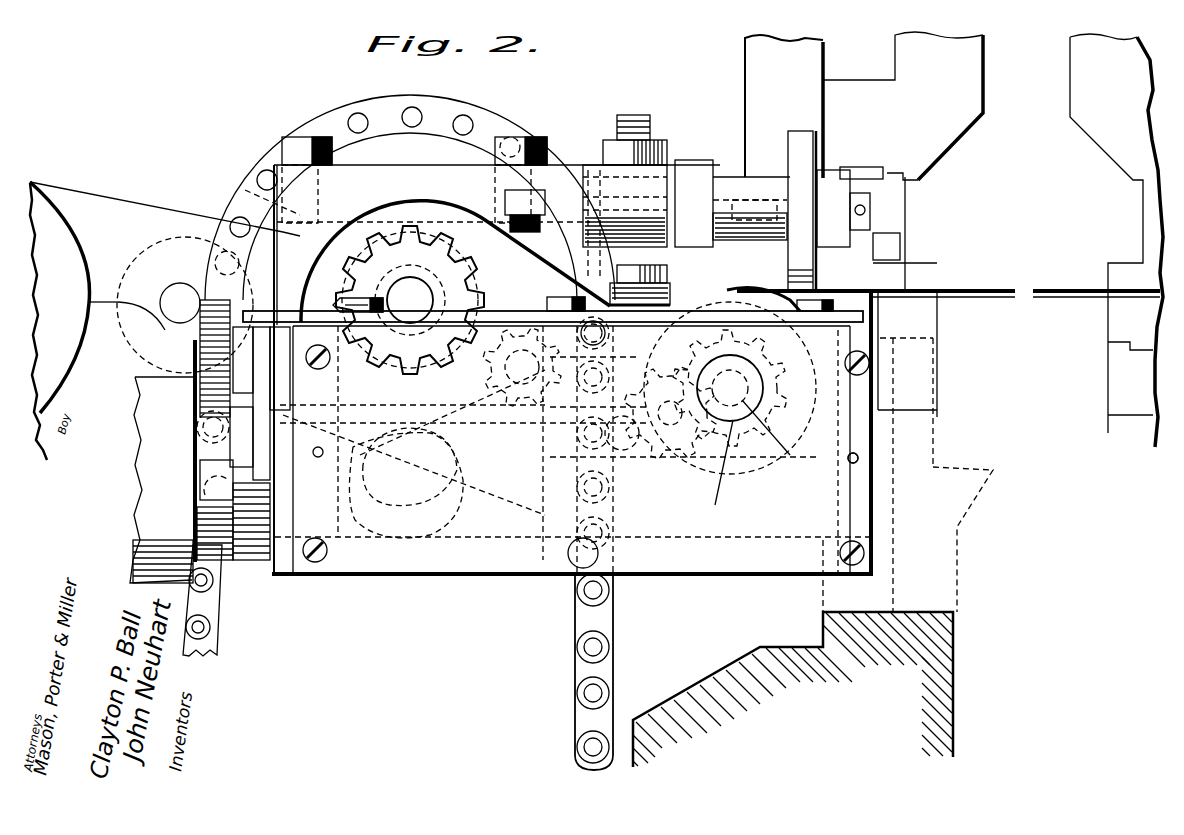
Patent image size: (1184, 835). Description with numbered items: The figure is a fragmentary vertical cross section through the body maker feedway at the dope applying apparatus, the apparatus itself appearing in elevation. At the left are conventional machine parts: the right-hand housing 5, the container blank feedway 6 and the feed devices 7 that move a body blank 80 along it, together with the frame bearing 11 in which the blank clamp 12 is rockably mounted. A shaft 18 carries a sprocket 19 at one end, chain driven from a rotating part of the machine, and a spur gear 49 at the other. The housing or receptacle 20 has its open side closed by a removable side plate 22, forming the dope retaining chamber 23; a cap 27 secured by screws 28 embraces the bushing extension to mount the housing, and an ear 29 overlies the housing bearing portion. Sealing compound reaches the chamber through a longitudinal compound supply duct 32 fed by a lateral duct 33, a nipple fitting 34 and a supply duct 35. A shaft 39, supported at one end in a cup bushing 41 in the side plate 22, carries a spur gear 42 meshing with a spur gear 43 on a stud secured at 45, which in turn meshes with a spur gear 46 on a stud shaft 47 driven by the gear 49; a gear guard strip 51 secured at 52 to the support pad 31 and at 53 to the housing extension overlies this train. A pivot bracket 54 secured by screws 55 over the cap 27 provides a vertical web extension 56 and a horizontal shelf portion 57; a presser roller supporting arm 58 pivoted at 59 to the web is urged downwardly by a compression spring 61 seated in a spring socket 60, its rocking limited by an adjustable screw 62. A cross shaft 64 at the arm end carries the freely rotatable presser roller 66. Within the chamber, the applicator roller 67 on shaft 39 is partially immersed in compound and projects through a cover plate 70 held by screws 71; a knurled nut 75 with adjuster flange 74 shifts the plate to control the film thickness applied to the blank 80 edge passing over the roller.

The right-hand housing 5 is at (813, 552).
The container blank feedway 6 is at (956, 347).
The feed devices 7 is at (920, 302).
The frame bearing 11 is at (74, 321).
The blank clamp 12 is at (757, 57).
The shaft 18 is at (410, 292).
The sprocket 19 is at (362, 132).
The housing or receptacle 20 is at (517, 578).
The removable side plate 22 is at (677, 577).
The dope retaining chamber 23 is at (770, 577).
The cap 27 is at (283, 232).
The screws 28 is at (245, 190).
The ear 29 is at (730, 388).
The support pad 31 is at (635, 350).
The longitudinal compound supply duct 32 is at (383, 577).
The lateral duct 33 is at (283, 577).
The nipple fitting 34 is at (197, 520).
The supply duct 35 is at (200, 480).
The shaft 39 is at (823, 468).
The cup bushing 41 is at (719, 473).
The spur gear 42 is at (765, 450).
The spur gear 43 is at (663, 464).
The stud shaft securing point 45 is at (670, 435).
The spur gear 46 is at (410, 318).
The stud shaft 47 is at (522, 366).
The spur gear 49 is at (358, 291).
The gear guard strip 51 is at (397, 205).
The securing point 52 is at (670, 294).
The securing point 53 is at (200, 432).
The pivot bracket 54 is at (283, 167).
The screws 55 is at (283, 143).
The vertical web extension 56 is at (570, 180).
The horizontal shelf portion 57 is at (667, 272).
The presser roller supporting arm 58 is at (662, 172).
The pivot 59 is at (597, 170).
The spring socket 60 is at (625, 206).
The compression spring 61 is at (732, 217).
The adjustable screw 62 is at (650, 120).
The cross shaft 64 is at (727, 180).
The presser roller 66 is at (812, 145).
The applicator roller 67 is at (720, 310).
The cover plate 70 is at (230, 270).
The screws 71 is at (555, 308).
The adjuster flange 74 is at (200, 393).
The knurled nut 75 is at (165, 357).
The body blank 80 is at (876, 279).